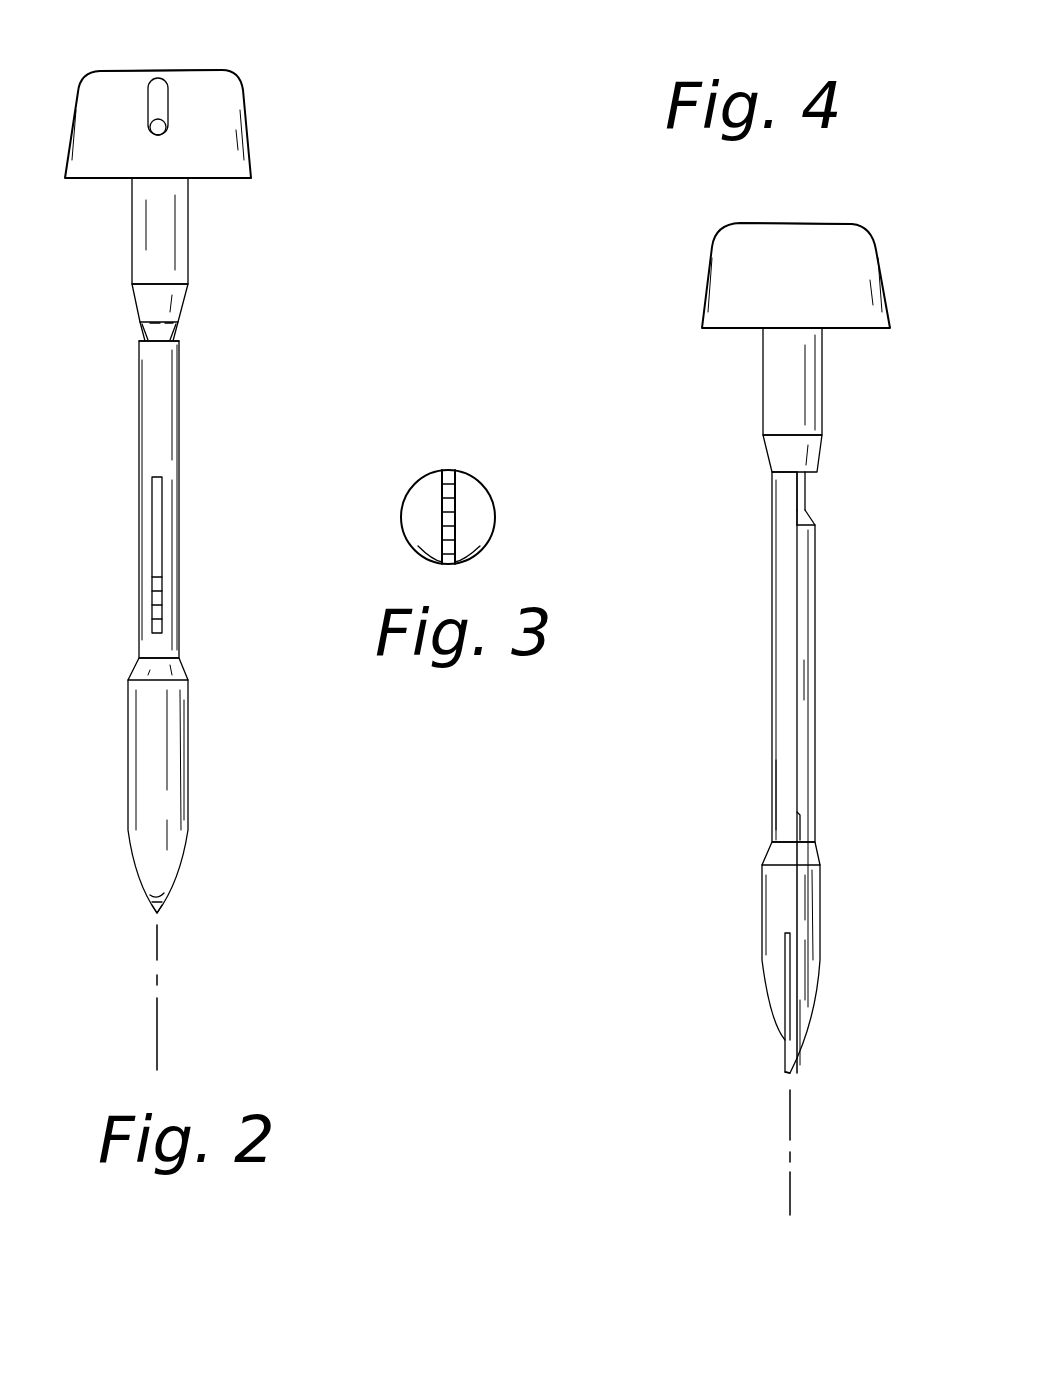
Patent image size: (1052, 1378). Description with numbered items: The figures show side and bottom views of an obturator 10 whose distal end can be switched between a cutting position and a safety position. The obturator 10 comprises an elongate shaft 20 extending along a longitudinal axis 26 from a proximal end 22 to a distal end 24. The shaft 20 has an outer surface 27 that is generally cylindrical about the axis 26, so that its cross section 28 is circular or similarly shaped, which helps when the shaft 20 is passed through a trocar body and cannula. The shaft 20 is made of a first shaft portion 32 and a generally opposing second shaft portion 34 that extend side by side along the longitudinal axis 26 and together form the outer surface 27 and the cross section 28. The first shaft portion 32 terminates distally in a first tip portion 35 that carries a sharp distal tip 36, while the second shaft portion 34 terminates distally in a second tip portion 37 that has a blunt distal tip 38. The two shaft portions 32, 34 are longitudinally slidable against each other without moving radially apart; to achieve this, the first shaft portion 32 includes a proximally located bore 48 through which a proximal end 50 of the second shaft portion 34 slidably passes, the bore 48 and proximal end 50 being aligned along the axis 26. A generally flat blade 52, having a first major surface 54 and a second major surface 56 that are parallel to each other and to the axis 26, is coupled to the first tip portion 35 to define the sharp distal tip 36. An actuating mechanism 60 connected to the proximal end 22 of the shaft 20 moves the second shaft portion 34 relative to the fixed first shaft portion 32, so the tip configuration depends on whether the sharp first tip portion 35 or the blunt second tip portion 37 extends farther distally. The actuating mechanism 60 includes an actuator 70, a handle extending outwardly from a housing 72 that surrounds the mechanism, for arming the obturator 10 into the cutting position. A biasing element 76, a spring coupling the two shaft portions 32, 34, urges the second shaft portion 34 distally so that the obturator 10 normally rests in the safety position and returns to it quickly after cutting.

In FIG. 2, the obturator 10 is at (260, 252).
In FIG. 4, the obturator 10 is at (688, 338).
In FIG. 2, the elongate shaft 20 is at (182, 470).
In FIG. 4, the elongate shaft 20 is at (815, 640).
In FIG. 2, the proximal end 22 is at (128, 190).
In FIG. 4, the proximal end 22 is at (760, 340).
In FIG. 2, the distal end 24 is at (181, 870).
In FIG. 4, the distal end 24 is at (785, 1052).
In FIG. 2, the longitudinal axis 26 is at (157, 1043).
In FIG. 4, the longitudinal axis 26 is at (790, 1188).
In FIG. 2, the outer surface 27 is at (170, 258).
In FIG. 4, the outer surface 27 is at (786, 698).
In FIG. 3, the cross section 28 is at (486, 482).
In FIG. 3, the first shaft portion 32 is at (418, 530).
In FIG. 4, the first shaft portion 32 is at (782, 780).
In FIG. 3, the second shaft portion 34 is at (478, 535).
In FIG. 4, the second shaft portion 34 is at (806, 790).
In FIG. 4, the first tip portion 35 is at (776, 985).
In FIG. 2, the sharp distal tip 36 is at (160, 915).
In FIG. 4, the second tip portion 37 is at (810, 1030).
In FIG. 4, the blunt distal tip 38 is at (795, 1075).
In FIG. 2, the bore 48 is at (138, 328).
In FIG. 4, the bore 48 is at (810, 478).
In FIG. 2, the proximal end of second shaft portion 50 is at (179, 326).
In FIG. 4, the proximal end of second shaft portion 50 is at (808, 498).
In FIG. 2, the blade 52 is at (150, 893).
In FIG. 3, the blade 52 is at (448, 468).
In FIG. 3, the first major surface 54 is at (425, 548).
In FIG. 3, the second major surface 56 is at (470, 550).
In FIG. 2, the actuating mechanism 60 is at (65, 82).
In FIG. 4, the actuating mechanism 60 is at (910, 278).
In FIG. 2, the actuator 70 is at (166, 127).
In FIG. 2, the housing 72 is at (237, 78).
In FIG. 4, the housing 72 is at (862, 234).
In FIG. 2, the biasing element 76 is at (156, 616).